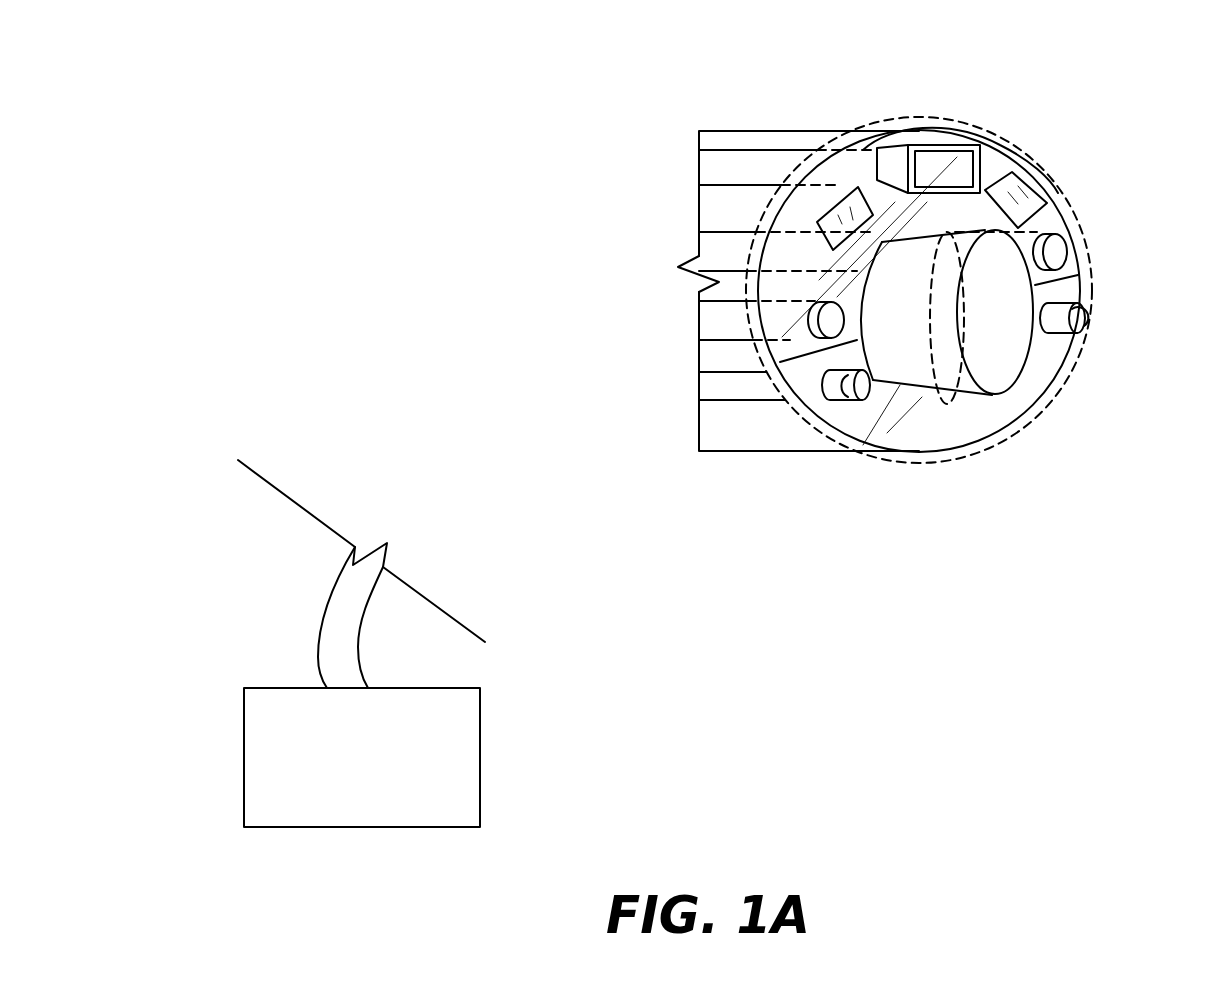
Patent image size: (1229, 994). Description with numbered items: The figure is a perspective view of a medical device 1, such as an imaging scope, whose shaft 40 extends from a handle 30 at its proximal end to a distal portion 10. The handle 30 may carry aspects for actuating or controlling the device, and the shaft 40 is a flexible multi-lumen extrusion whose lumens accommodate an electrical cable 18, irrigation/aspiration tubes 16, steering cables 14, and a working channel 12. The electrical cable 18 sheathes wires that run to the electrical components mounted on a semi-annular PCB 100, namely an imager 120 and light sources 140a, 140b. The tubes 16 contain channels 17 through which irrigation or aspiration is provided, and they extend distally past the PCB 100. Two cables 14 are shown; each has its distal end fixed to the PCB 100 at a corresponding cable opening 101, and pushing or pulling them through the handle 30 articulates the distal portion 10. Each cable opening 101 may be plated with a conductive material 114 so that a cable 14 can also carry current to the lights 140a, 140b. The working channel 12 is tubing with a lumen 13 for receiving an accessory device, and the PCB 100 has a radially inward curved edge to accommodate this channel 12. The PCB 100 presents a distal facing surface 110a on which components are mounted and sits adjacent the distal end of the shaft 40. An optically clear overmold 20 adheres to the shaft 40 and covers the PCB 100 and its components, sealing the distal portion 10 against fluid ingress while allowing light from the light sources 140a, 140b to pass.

The medical device 1 is at (494, 53).
The distal portion 10 is at (1056, 82).
The working channel 12 is at (927, 360).
The lumen 13 is at (993, 347).
The cable 14 is at (712, 252).
The irrigation/aspiration tube 16 is at (848, 390).
The channel 17 is at (862, 386).
The electrical cable 18 is at (712, 175).
The overmold 20 is at (953, 120).
The handle 30 is at (244, 775).
The shaft 40 is at (325, 607).
The PCB 100 is at (1072, 262).
The cable opening 101 is at (828, 320).
The distal facing surface 110a is at (823, 172).
The conductive material 114 is at (812, 337).
The imager 120 is at (968, 170).
The light source 140a is at (853, 197).
The light source 140b is at (1022, 168).